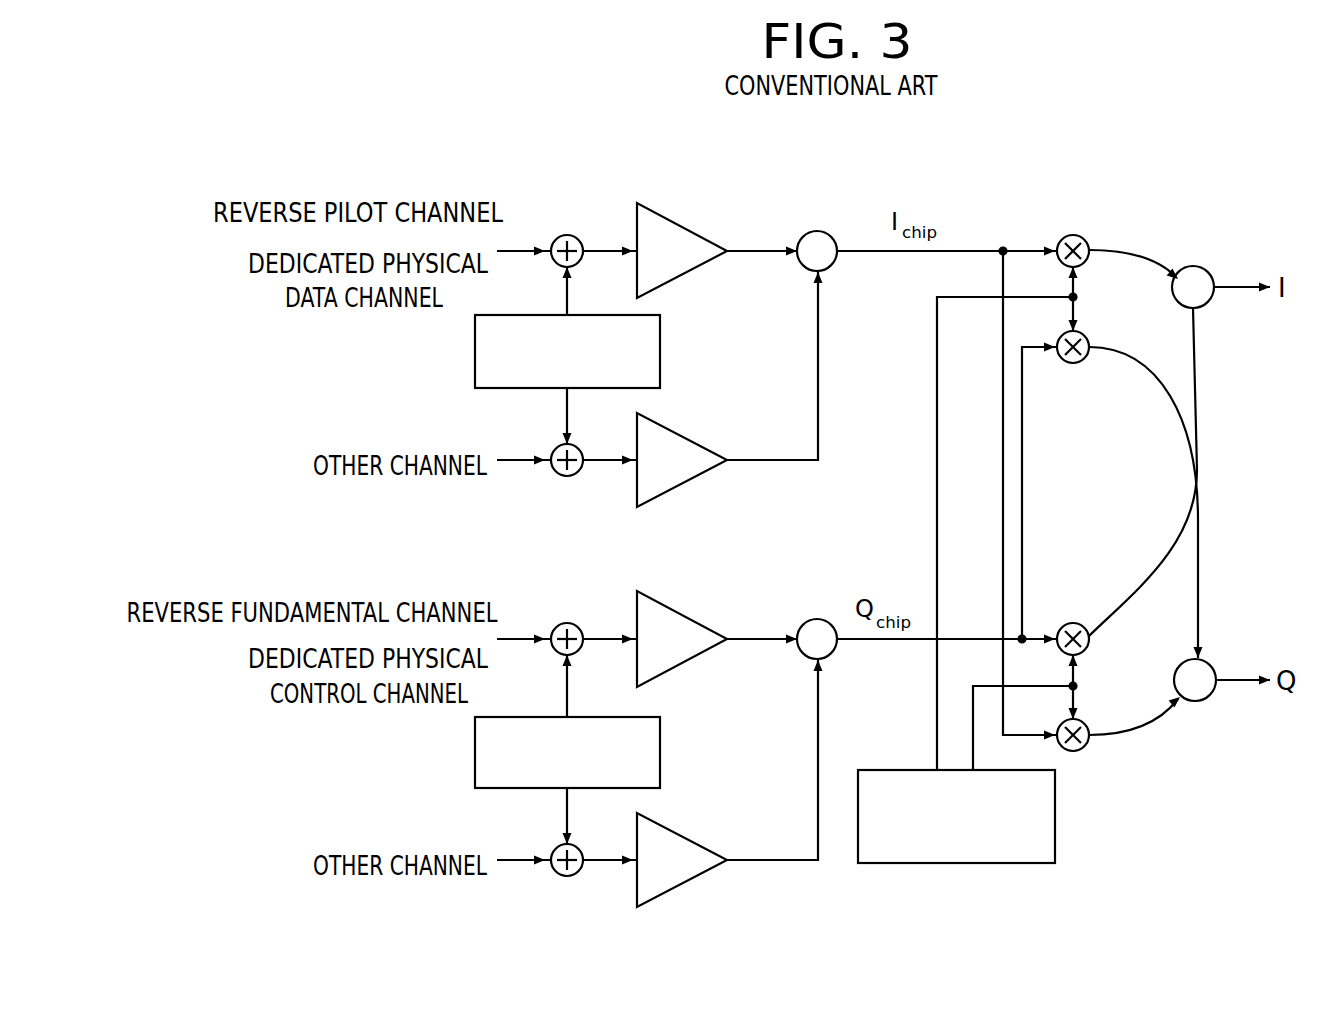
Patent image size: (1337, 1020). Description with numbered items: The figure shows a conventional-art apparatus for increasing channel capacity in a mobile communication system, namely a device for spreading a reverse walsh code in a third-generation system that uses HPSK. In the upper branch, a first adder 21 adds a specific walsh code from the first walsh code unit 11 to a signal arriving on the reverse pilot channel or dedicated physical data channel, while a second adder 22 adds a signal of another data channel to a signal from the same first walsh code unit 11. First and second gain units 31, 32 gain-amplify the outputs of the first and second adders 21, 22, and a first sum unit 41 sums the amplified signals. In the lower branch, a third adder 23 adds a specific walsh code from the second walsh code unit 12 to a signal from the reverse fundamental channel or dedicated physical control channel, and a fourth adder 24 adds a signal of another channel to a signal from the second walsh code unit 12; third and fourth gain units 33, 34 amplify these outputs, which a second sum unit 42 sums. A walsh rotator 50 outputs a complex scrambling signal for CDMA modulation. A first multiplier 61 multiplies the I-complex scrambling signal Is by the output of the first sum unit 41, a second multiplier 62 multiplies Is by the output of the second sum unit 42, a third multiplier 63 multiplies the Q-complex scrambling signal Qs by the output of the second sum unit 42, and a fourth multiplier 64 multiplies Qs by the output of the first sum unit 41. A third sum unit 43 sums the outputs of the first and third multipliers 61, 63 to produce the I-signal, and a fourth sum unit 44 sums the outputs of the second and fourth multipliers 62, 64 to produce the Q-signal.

The first walsh code unit 11 is at (660, 341).
The second walsh code unit 12 is at (660, 741).
The first adder 21 is at (567, 235).
The second adder 22 is at (578, 445).
The third adder 23 is at (567, 623).
The fourth adder 24 is at (578, 845).
The first gain unit 31 is at (684, 222).
The second gain unit 32 is at (684, 430).
The third gain unit 33 is at (684, 610).
The fourth gain unit 34 is at (684, 830).
The first sum unit 41 is at (822, 231).
The second sum unit 42 is at (822, 619).
The third sum unit 43 is at (1204, 267).
The fourth sum unit 44 is at (1213, 665).
The walsh rotator 50 is at (1055, 815).
The first multiplier 61 is at (1080, 233).
The second multiplier 62 is at (1084, 331).
The third multiplier 63 is at (1080, 622).
The fourth multiplier 64 is at (1085, 720).